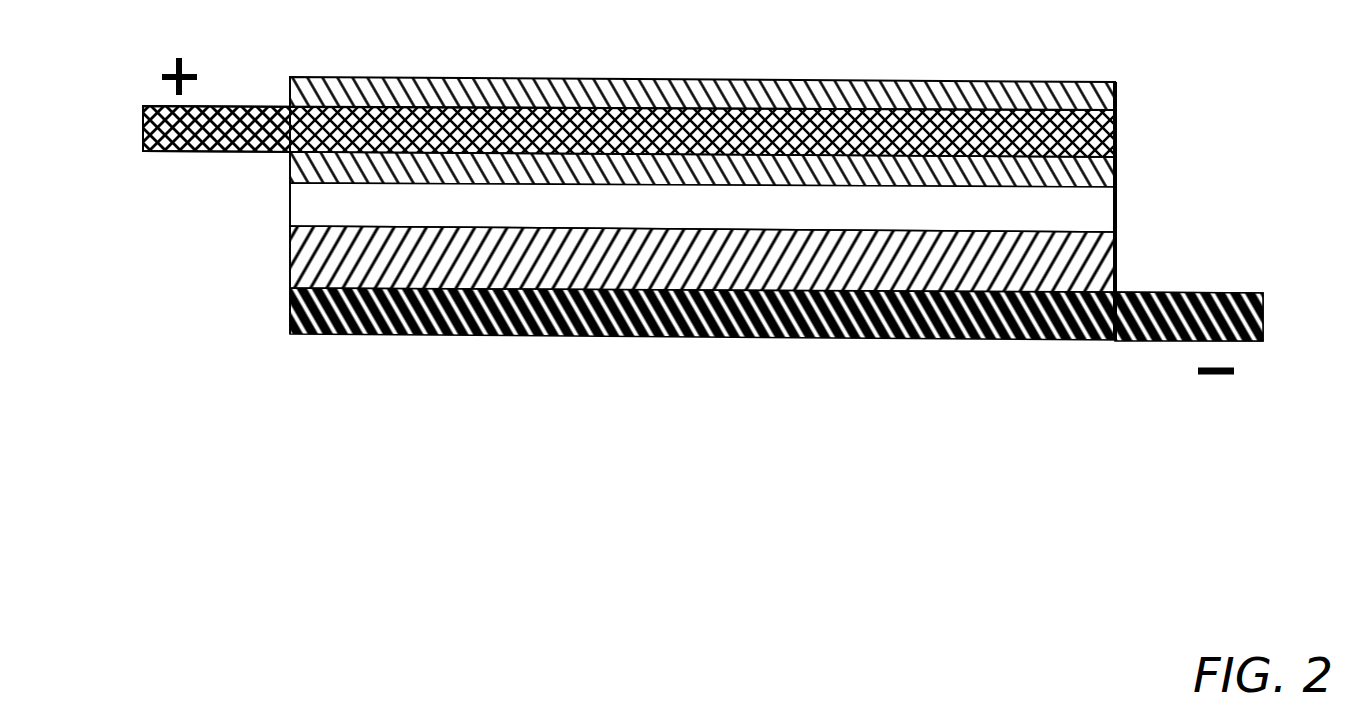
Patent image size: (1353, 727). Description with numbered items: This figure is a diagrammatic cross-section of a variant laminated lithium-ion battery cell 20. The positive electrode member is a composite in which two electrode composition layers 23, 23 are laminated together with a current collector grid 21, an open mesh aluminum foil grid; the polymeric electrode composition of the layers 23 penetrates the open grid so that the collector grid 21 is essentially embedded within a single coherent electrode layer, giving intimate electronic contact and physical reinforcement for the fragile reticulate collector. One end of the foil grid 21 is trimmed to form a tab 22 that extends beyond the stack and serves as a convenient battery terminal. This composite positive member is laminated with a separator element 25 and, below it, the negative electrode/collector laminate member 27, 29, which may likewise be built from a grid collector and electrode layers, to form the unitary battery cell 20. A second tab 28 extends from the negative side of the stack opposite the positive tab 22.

The battery cell 20 is at (663, 408).
The current collector grid 21 is at (1117, 131).
The tab 22 is at (143, 123).
The electrode composition layers 23 is at (1117, 90).
The separator element 25 is at (1104, 208).
The negative electrode layer 27 is at (297, 250).
The negative terminal tab 28 is at (1263, 322).
The negative collector 29 is at (297, 308).